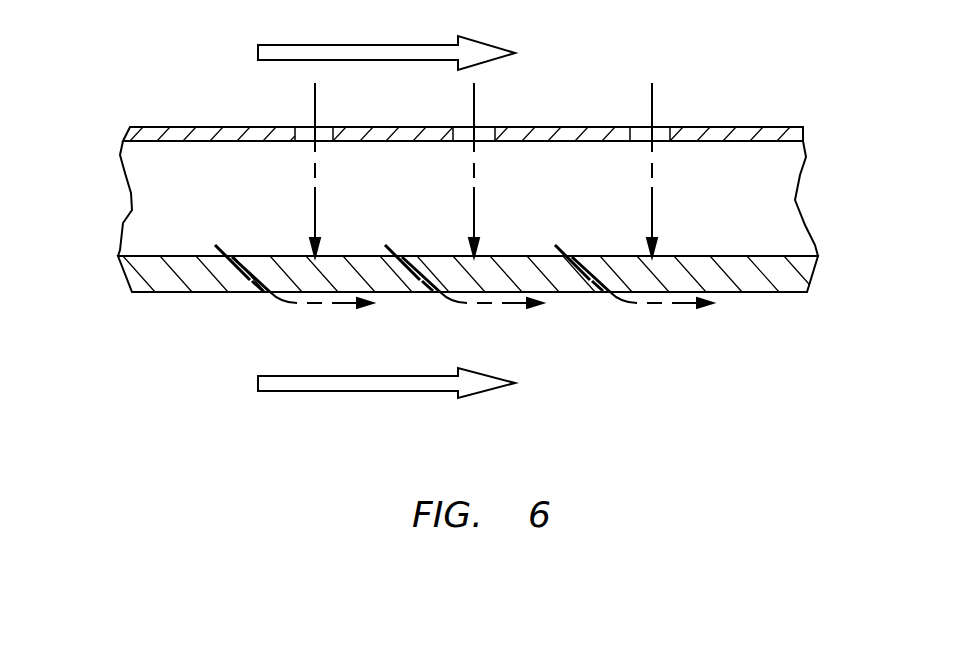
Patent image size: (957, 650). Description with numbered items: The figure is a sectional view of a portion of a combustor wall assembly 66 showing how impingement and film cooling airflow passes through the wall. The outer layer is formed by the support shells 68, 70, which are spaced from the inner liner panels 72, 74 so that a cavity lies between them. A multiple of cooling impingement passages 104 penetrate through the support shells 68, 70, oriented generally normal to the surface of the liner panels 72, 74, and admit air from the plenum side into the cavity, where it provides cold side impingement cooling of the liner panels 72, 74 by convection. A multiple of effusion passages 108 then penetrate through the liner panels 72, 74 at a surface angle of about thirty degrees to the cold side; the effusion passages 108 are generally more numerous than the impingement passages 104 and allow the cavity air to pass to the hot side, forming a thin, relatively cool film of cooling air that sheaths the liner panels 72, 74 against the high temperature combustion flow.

The combustor wall assembly 66 is at (522, 442).
The support shell 68 is at (524, 114).
The support shell 70 is at (797, 132).
The liner panel 72 is at (532, 292).
The liner panel 74 is at (803, 274).
The impingement passages 104 is at (483, 133).
The effusion passages 108 is at (423, 280).